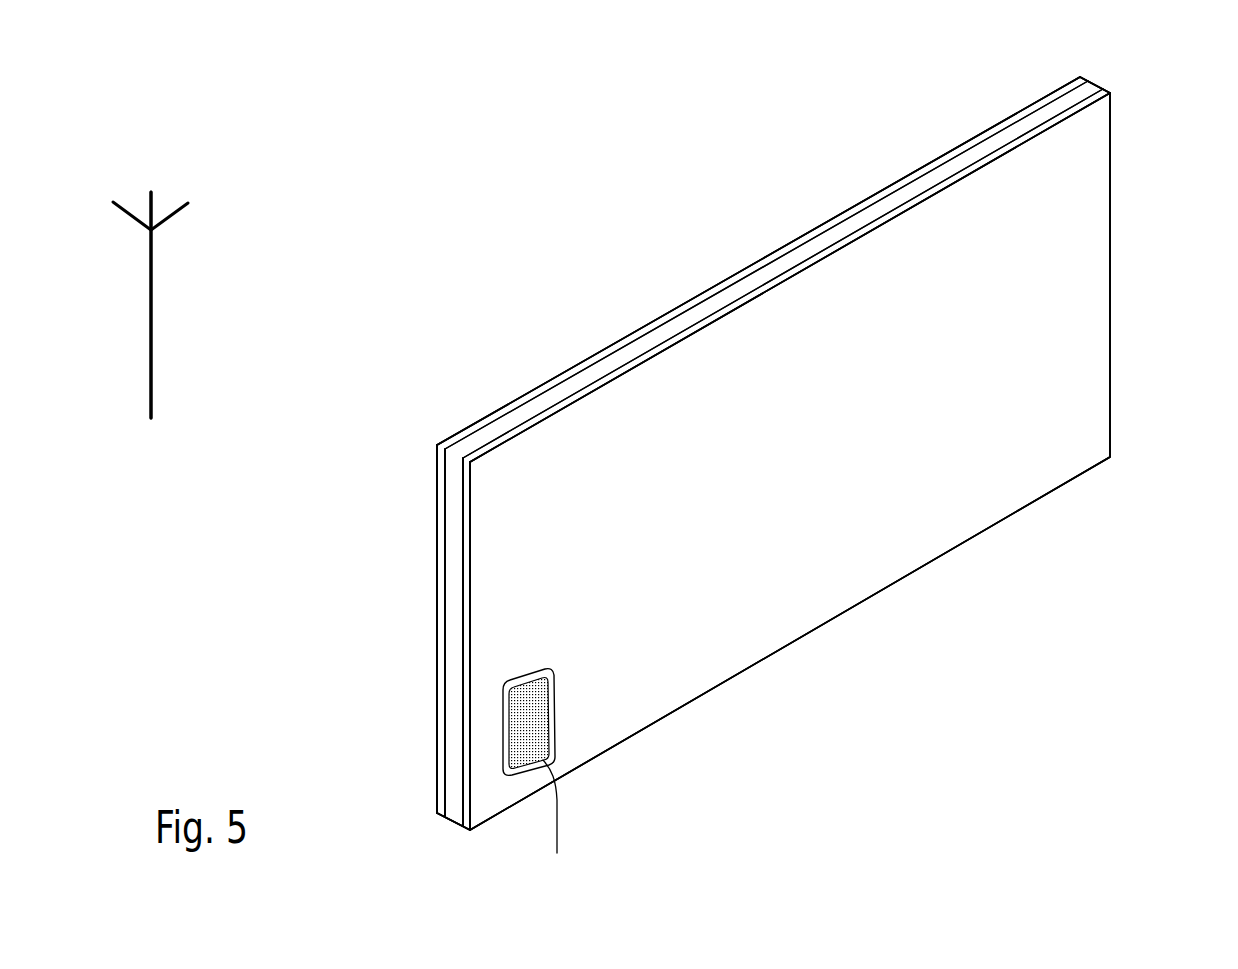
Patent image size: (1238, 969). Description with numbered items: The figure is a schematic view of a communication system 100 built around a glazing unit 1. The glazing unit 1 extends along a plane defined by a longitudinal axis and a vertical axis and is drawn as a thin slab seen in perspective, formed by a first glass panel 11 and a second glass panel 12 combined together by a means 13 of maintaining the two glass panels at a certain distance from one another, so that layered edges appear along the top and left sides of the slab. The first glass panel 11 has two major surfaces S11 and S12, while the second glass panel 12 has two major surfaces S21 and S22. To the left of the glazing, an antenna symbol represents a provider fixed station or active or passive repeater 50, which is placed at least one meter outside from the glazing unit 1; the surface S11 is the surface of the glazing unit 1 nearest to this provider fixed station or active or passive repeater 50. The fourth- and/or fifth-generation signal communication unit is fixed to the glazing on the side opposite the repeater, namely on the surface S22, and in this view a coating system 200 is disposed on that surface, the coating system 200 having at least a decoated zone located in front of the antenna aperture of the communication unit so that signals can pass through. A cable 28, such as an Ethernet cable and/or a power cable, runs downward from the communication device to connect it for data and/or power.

The communication system 100 is at (547, 79).
The glazing unit 1 is at (1150, 297).
The first glass panel 11 is at (457, 440).
The second glass panel 12 is at (547, 412).
The means of maintaining the two glass panels at a certain distance 13 is at (605, 373).
The major surface of first glass panel S11 is at (438, 632).
The major surface of first glass panel S12 is at (445, 672).
The major surface of second glass panel S21 is at (462, 727).
The major surface of second glass panel S22 is at (815, 605).
The provider fixed station or active or passive repeater 50 is at (153, 323).
The coating system 200 is at (577, 734).
The cable 28 is at (558, 828).